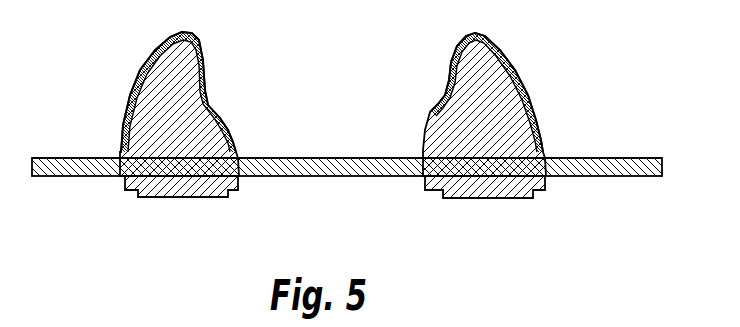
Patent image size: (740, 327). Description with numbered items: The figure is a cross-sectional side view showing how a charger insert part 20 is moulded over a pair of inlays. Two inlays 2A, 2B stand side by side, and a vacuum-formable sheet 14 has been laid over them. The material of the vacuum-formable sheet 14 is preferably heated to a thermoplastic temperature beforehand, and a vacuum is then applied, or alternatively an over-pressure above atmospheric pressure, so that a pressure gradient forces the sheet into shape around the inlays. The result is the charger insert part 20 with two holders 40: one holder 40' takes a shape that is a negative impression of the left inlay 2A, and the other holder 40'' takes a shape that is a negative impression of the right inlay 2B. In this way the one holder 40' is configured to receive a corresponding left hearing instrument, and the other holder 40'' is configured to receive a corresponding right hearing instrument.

The vacuum-formable sheet 14 is at (610, 157).
The charger insert part 20 is at (330, 156).
The left inlay 2A is at (201, 133).
The right inlay 2B is at (506, 134).
The holders 40 is at (355, 134).
The left holder 40' is at (202, 81).
The right holder 40'' is at (510, 81).